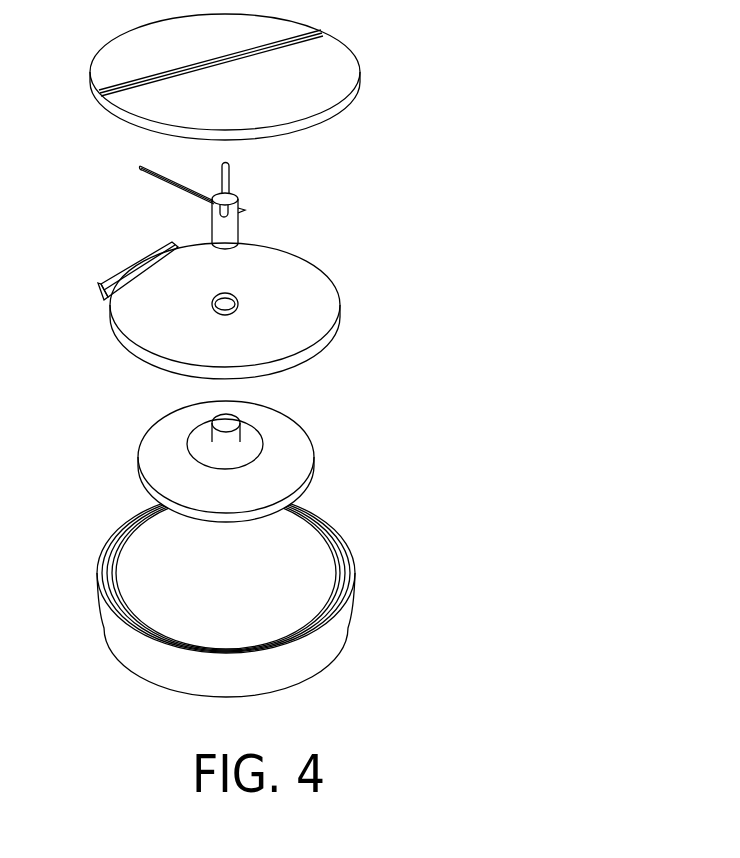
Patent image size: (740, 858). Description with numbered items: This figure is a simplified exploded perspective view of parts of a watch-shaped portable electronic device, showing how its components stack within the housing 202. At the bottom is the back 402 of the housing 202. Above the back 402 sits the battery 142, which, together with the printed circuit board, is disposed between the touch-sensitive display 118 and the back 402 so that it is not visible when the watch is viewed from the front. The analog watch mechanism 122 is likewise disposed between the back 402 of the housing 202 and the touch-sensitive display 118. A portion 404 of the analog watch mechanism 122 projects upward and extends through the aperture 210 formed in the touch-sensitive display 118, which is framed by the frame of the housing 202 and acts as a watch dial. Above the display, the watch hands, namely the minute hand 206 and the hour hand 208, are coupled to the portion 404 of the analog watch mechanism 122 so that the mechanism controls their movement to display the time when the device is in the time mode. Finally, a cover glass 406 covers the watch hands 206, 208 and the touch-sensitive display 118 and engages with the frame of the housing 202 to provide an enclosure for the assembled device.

The cover glass 406 is at (364, 68).
The hour hand 208 is at (232, 177).
The minute hand 206 is at (143, 173).
The aperture 210 is at (244, 305).
The touch-sensitive display 118 is at (278, 337).
The portion of the analog watch mechanism 404 is at (212, 431).
The analog watch mechanism 122 is at (250, 439).
The battery 142 is at (274, 455).
The back 402 is at (308, 562).
The housing 202 is at (358, 590).